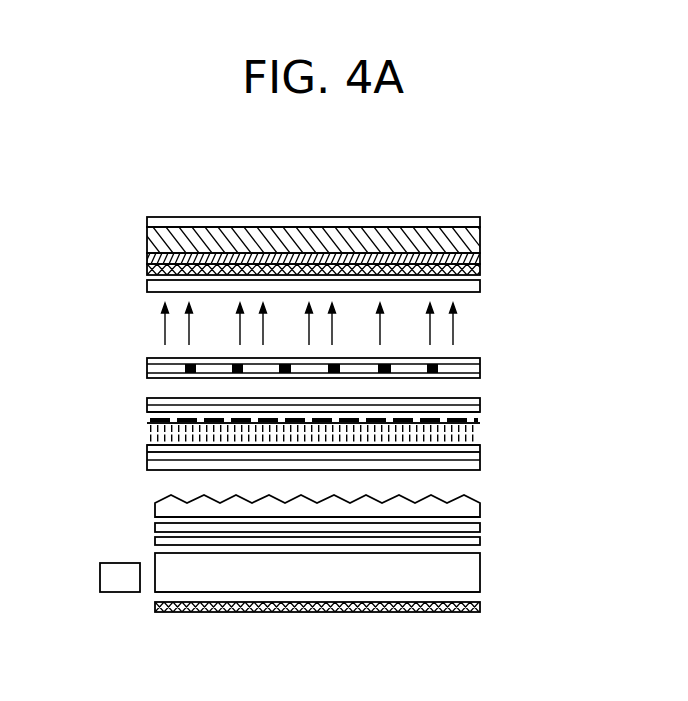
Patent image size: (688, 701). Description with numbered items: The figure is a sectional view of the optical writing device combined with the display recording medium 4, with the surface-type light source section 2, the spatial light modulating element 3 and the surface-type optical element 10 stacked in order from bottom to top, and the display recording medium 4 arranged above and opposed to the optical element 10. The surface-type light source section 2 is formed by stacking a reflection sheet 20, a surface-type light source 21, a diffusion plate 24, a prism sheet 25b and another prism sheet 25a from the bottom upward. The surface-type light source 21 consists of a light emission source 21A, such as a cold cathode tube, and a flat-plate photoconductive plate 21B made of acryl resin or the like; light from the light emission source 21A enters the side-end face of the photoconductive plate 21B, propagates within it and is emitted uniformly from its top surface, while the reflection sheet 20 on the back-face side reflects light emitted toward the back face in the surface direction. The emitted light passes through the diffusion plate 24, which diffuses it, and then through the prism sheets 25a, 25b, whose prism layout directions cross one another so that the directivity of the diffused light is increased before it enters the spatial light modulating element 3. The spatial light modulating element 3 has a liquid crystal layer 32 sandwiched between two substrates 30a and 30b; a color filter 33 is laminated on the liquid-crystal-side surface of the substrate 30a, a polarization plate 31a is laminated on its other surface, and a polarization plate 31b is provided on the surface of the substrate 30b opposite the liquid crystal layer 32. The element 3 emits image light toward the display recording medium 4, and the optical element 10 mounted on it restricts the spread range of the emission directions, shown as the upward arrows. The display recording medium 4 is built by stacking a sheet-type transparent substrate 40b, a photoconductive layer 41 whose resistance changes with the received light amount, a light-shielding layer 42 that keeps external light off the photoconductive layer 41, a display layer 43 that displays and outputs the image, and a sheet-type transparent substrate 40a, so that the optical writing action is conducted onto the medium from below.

The surface-type light source section 2 is at (320, 578).
The spatial light modulating element 3 is at (338, 415).
The display recording medium 4 is at (310, 251).
The surface-type optical element 10 is at (147, 366).
The reflection sheet 20 is at (195, 612).
The surface-type light source 21 is at (488, 550).
The light emission source 21A is at (108, 577).
The photoconductive plate 21B is at (468, 586).
The diffusion plate 24 is at (473, 541).
The prism sheet 25a is at (468, 503).
The prism sheet 25b is at (476, 527).
The substrate 30a is at (147, 411).
The substrate 30b is at (147, 452).
The polarization plate 31a is at (484, 412).
The polarization plate 31b is at (484, 455).
The liquid crystal layer 32 is at (466, 432).
The color filter 33 is at (480, 420).
The sheet-type transparent substrate 40a is at (147, 222).
The sheet-type transparent substrate 40b is at (147, 286).
The photoconductive layer 41 is at (480, 270).
The light-shielding layer 42 is at (480, 258).
The display layer 43 is at (480, 238).